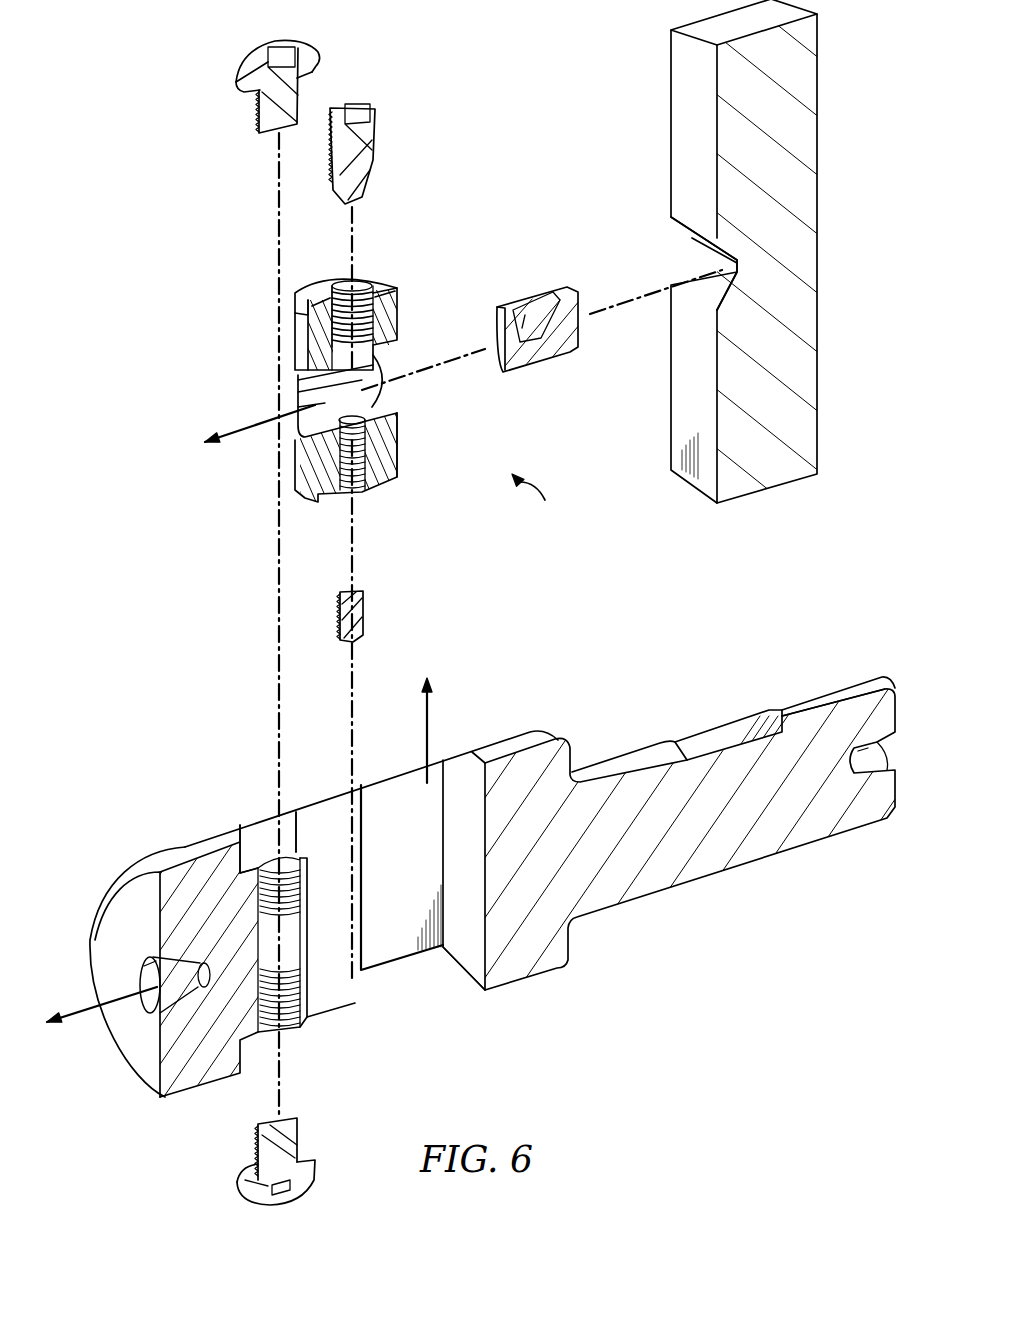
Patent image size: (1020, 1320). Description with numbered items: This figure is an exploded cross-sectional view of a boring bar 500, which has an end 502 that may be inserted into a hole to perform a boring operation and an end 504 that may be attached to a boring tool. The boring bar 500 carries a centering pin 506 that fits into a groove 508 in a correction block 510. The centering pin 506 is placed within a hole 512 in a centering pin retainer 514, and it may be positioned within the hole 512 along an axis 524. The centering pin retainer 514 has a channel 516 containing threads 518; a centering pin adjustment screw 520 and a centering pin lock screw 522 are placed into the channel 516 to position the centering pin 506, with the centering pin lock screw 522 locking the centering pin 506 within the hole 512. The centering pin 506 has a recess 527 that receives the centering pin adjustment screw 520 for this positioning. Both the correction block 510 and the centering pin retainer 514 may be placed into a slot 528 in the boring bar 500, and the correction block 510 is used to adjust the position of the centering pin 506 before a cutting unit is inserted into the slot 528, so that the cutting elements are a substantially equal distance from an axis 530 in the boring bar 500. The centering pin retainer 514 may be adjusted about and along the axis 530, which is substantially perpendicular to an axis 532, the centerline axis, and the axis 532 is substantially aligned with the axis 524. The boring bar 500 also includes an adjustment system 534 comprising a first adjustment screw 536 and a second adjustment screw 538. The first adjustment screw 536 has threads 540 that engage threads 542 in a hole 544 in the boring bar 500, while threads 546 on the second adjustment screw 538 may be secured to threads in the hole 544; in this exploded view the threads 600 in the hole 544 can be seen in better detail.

The boring bar 500 is at (542, 756).
The end 502 is at (233, 924).
The end 504 is at (866, 678).
The centering pin 506 is at (548, 332).
The groove 508 is at (708, 255).
The correction block 510 is at (818, 199).
The hole 512 is at (381, 393).
The centering pin retainer 514 is at (390, 453).
The channel 516 is at (395, 252).
The threads 518 is at (393, 320).
The centering pin adjustment screw 520 is at (352, 102).
The centering pin lock screw 522 is at (368, 620).
The axis 524 is at (243, 428).
The recess 527 is at (540, 303).
The slot 528 is at (470, 960).
The axis 530 is at (428, 715).
The axis 532 is at (80, 1023).
The adjustment system 534 is at (548, 497).
The first adjustment screw 536 is at (253, 74).
The second adjustment screw 538 is at (251, 1193).
The threads 540 is at (258, 117).
The threads 542 is at (262, 905).
The hole 544 is at (258, 835).
The threads 546 is at (257, 1143).
The threads 600 is at (290, 985).